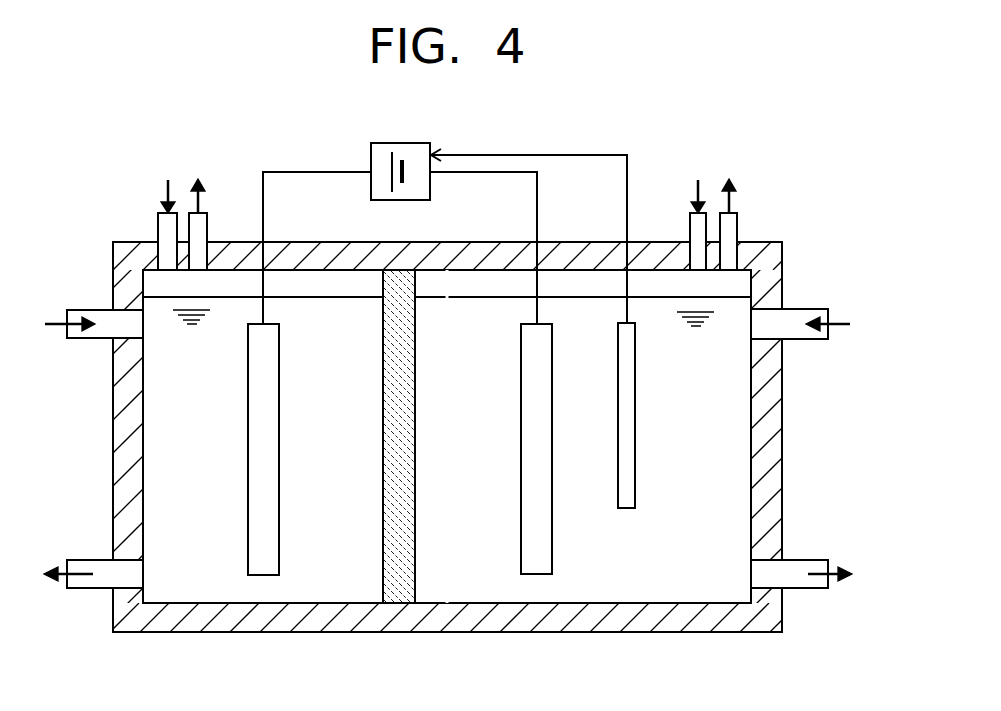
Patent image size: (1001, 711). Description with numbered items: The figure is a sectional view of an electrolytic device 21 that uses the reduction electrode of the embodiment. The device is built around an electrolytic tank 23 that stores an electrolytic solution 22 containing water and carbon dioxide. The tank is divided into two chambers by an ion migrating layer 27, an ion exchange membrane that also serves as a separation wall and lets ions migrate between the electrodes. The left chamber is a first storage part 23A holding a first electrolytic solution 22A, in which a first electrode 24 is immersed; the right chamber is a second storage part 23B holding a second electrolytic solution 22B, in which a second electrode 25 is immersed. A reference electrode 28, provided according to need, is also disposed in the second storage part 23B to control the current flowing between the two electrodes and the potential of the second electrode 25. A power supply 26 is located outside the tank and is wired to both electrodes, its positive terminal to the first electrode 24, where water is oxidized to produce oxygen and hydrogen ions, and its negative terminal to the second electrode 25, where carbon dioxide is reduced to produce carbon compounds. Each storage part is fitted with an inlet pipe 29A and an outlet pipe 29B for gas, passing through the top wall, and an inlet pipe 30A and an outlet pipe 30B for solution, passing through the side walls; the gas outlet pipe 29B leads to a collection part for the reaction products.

The electrolytic device 21 is at (757, 160).
The electrolytic solution 22 is at (732, 442).
The first electrolytic solution 22A is at (280, 590).
The second electrolytic solution 22B is at (607, 590).
The electrolytic tank 23 is at (767, 480).
The first storage part 23A is at (198, 605).
The second storage part 23B is at (523, 605).
The first electrode 24 is at (248, 423).
The second electrode 25 is at (521, 423).
The power supply 26 is at (371, 152).
The ion migrating layer 27 is at (407, 590).
The reference electrode 28 is at (636, 378).
The inlet pipe of gas 29A is at (158, 222).
The outlet pipe of gas 29B is at (207, 214).
The inlet pipe of solution 30A is at (93, 310).
The outlet pipe of solution 30B is at (100, 559).